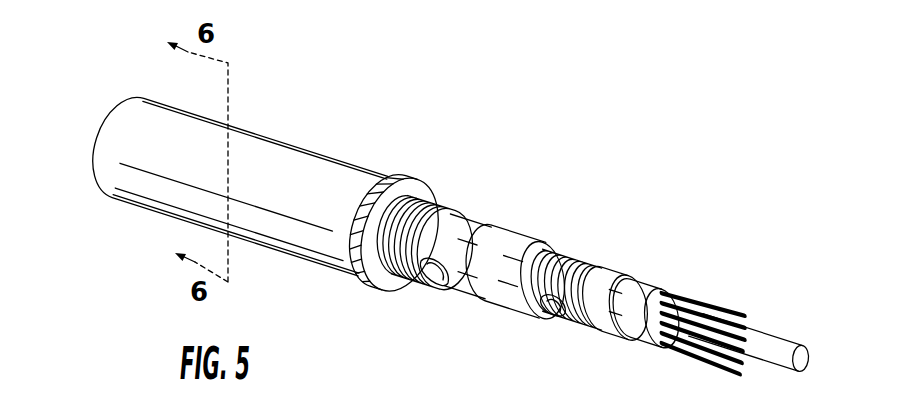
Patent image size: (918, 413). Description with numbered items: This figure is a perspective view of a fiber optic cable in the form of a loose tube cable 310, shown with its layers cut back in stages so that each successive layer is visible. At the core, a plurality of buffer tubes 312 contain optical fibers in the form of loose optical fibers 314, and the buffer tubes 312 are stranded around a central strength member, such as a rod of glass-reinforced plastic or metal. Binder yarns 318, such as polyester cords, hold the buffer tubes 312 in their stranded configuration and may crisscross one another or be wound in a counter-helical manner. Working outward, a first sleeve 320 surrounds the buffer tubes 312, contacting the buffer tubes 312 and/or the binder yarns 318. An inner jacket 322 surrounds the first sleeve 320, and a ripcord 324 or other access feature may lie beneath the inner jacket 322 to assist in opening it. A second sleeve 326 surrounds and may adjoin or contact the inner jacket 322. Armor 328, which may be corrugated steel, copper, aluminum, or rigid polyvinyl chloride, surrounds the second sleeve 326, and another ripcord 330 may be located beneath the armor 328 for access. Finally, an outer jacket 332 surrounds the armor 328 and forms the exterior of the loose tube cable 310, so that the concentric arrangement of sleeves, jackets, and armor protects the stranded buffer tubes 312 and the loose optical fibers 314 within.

The loose tube cable 310 is at (603, 177).
The buffer tubes 312 is at (675, 295).
The loose optical fibers 314 is at (750, 312).
The binder yarns 318 is at (653, 302).
The first sleeve 320 is at (593, 267).
The inner jacket 322 is at (527, 250).
The ripcord 324 is at (553, 315).
The second sleeve 326 is at (470, 225).
The armor 328 is at (405, 183).
The ripcord 330 is at (447, 285).
The outer jacket 332 is at (297, 157).